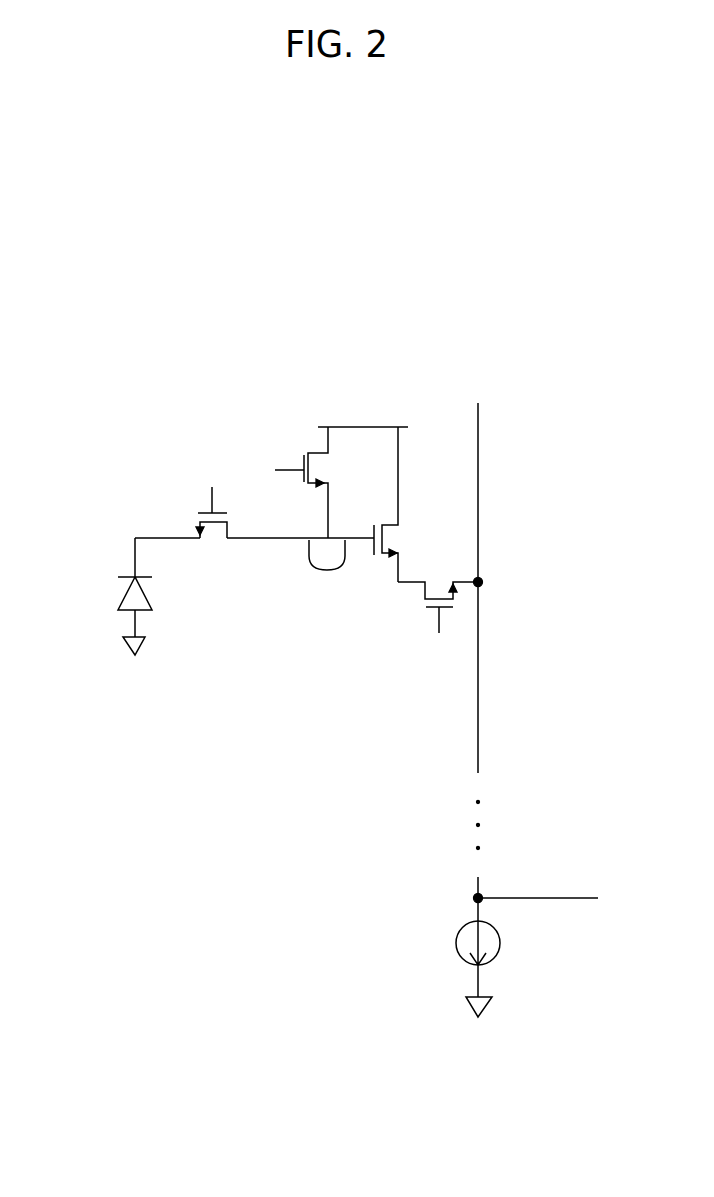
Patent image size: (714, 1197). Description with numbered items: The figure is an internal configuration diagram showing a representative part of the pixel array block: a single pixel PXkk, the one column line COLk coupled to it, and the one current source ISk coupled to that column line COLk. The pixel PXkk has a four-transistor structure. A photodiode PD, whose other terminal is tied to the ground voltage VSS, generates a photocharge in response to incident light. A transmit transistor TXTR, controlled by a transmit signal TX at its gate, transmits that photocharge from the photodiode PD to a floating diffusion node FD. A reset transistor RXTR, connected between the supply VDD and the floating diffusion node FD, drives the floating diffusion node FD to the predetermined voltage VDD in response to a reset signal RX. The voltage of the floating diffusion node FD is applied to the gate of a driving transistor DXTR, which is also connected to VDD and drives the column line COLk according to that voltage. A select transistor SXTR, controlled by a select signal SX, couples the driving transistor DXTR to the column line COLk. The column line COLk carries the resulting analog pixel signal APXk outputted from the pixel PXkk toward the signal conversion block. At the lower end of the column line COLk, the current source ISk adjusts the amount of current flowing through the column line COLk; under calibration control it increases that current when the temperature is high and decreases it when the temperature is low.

The pixel PXkk is at (118, 458).
The transmit signal TX is at (212, 485).
The transmit transistor TXTR is at (212, 540).
The reset signal RX is at (275, 472).
The reset transistor RXTR is at (335, 482).
The predetermined voltage VDD is at (363, 412).
The floating diffusion node FD is at (327, 555).
The driving transistor DXTR is at (405, 504).
The select transistor SXTR is at (438, 580).
The select signal SX is at (439, 636).
The photodiode PD is at (147, 587).
The ground voltage VSS is at (134, 662).
The column line COLk is at (480, 462).
The analog pixel signal APXk is at (580, 883).
The current source ISk is at (456, 948).